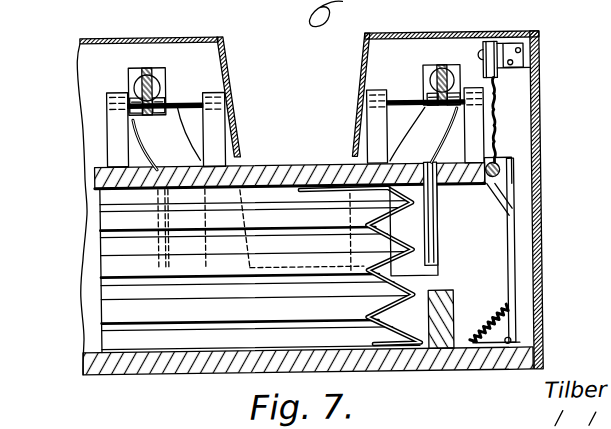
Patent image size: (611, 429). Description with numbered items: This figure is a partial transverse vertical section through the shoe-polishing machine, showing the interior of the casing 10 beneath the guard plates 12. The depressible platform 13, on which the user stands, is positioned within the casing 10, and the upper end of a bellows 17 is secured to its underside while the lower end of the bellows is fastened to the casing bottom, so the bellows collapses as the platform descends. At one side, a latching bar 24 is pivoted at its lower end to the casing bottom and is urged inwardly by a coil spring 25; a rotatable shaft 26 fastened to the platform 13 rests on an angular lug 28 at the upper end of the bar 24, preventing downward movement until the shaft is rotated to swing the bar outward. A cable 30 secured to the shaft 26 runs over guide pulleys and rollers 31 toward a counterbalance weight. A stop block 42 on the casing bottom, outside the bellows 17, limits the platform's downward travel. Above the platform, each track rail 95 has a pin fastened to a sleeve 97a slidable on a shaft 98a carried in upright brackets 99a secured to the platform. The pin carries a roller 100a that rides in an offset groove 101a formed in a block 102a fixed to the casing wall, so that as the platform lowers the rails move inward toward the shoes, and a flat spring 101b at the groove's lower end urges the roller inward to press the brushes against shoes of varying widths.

The casing 10 is at (115, 34).
The guard plates 12 is at (224, 48).
The depressible platform 13 is at (275, 165).
The bellows 17 is at (171, 313).
The latching bar 24 is at (515, 246).
The coil spring 25 is at (505, 325).
The rotatable shaft 26 is at (512, 170).
The angular lug 28 is at (493, 199).
The cable 30 is at (506, 84).
The guide pulleys and rollers 31 is at (503, 40).
The stop block 42 is at (447, 291).
The track rail 95 is at (167, 78).
The sleeve 97a is at (426, 92).
The shaft 98a is at (188, 99).
The upright bracket 99a is at (118, 132).
The roller 100a is at (453, 65).
The offset groove 101a is at (183, 146).
The flat spring 101b is at (437, 242).
The block 102a is at (94, 71).